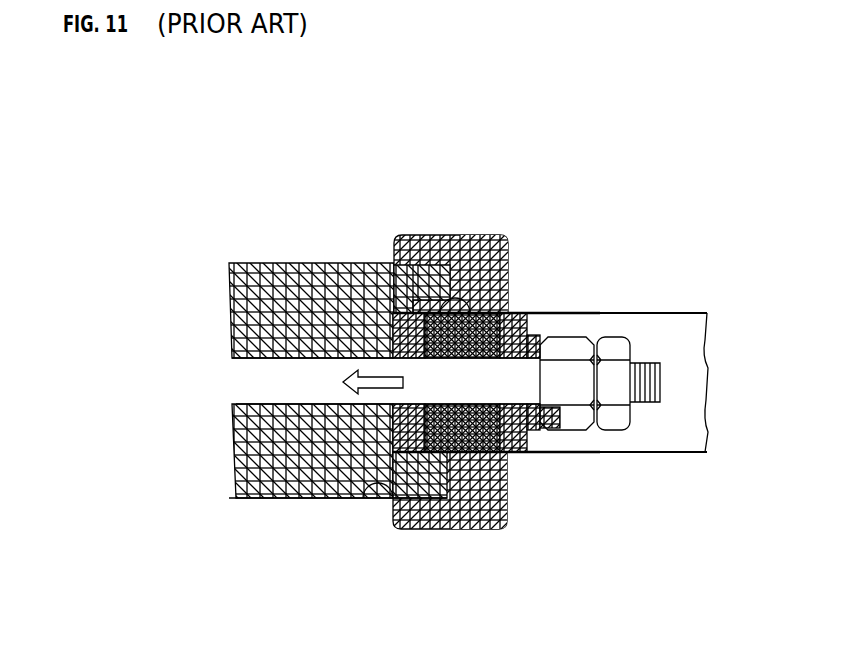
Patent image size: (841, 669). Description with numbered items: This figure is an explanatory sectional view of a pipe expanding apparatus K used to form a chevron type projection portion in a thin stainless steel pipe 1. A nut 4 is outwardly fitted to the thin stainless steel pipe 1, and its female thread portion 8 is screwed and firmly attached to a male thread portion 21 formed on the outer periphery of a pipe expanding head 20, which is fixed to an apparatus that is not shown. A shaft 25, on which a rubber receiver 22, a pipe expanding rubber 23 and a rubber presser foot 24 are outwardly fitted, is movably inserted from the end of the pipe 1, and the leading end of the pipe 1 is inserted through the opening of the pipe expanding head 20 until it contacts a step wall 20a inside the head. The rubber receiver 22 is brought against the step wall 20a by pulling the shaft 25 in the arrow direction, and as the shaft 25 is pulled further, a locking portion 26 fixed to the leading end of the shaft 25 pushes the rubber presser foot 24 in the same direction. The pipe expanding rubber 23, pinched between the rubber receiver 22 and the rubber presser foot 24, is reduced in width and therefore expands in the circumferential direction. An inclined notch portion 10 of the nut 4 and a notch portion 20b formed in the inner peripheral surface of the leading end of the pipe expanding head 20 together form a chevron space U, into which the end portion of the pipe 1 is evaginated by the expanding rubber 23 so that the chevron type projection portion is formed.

The thin stainless steel pipe 1 is at (622, 312).
The nut 4 is at (452, 530).
The female thread portion 8 is at (367, 487).
The inclined notch portion 10 is at (497, 530).
The pipe expanding head 20 is at (295, 262).
The step wall 20a is at (393, 440).
The notch portion 20b is at (397, 520).
The male thread portion 21 is at (391, 262).
The rubber receiver 22 is at (438, 234).
The pipe expanding rubber 23 is at (497, 234).
The rubber presser foot 24 is at (517, 312).
The shaft 25 is at (255, 383).
The locking portion 26 is at (573, 420).
The pipe expanding apparatus K is at (240, 206).
The chevron space U is at (461, 300).